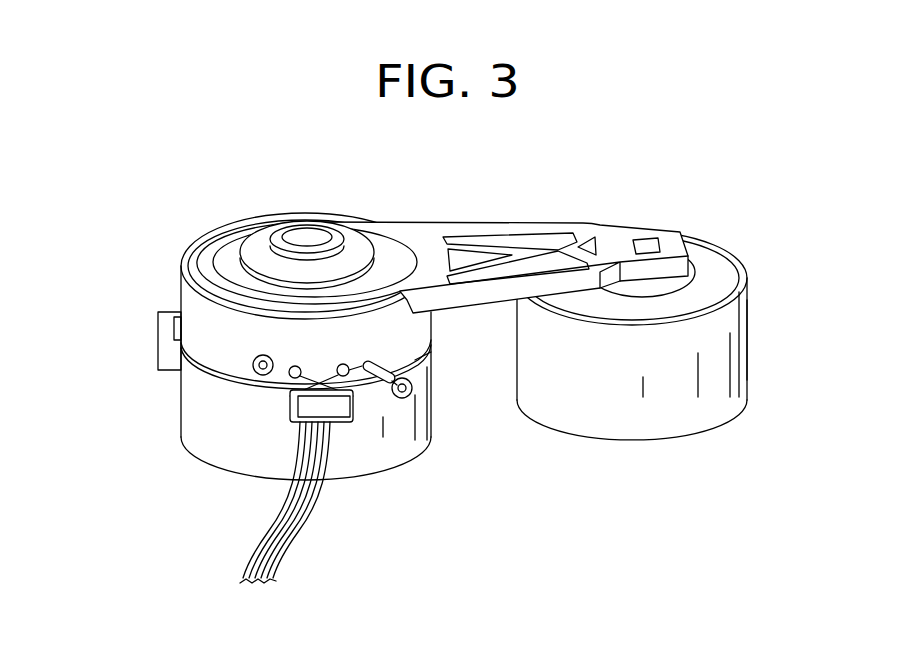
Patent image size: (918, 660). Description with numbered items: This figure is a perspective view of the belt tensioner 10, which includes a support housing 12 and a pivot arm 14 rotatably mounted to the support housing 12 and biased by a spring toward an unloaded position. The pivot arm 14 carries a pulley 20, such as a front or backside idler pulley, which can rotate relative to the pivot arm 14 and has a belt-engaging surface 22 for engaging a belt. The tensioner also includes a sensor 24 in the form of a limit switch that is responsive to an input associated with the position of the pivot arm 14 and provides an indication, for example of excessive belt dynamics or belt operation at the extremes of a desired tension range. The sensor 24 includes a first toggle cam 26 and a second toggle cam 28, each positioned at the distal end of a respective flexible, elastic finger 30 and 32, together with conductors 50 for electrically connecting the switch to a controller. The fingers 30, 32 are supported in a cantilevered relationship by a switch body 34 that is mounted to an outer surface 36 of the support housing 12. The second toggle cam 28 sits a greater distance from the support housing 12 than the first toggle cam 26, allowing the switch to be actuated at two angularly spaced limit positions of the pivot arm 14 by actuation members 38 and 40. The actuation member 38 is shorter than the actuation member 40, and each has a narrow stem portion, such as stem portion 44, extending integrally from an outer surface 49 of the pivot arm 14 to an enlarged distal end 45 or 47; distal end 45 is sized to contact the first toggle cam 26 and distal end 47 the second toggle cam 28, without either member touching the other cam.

The belt tensioner 10 is at (686, 199).
The support housing 12 is at (181, 398).
The pivot arm 14 is at (540, 224).
The pulley 20 is at (667, 412).
The belt-engaging surface 22 is at (733, 363).
The sensor 24 is at (352, 420).
The first toggle cam 26 is at (378, 362).
The second toggle cam 28 is at (293, 393).
The flexible, elastic finger 30 is at (340, 363).
The flexible, elastic finger 32 is at (282, 393).
The switch body 34 is at (296, 398).
The outer surface 36 is at (183, 417).
The actuation member 38 is at (255, 360).
The actuation member 40 is at (411, 394).
The narrow stem portion 44 is at (420, 357).
The enlarged distal end 45 is at (290, 366).
The enlarged distal end 47 is at (425, 376).
The outer surface 49 is at (181, 293).
The conductors 50 is at (250, 553).